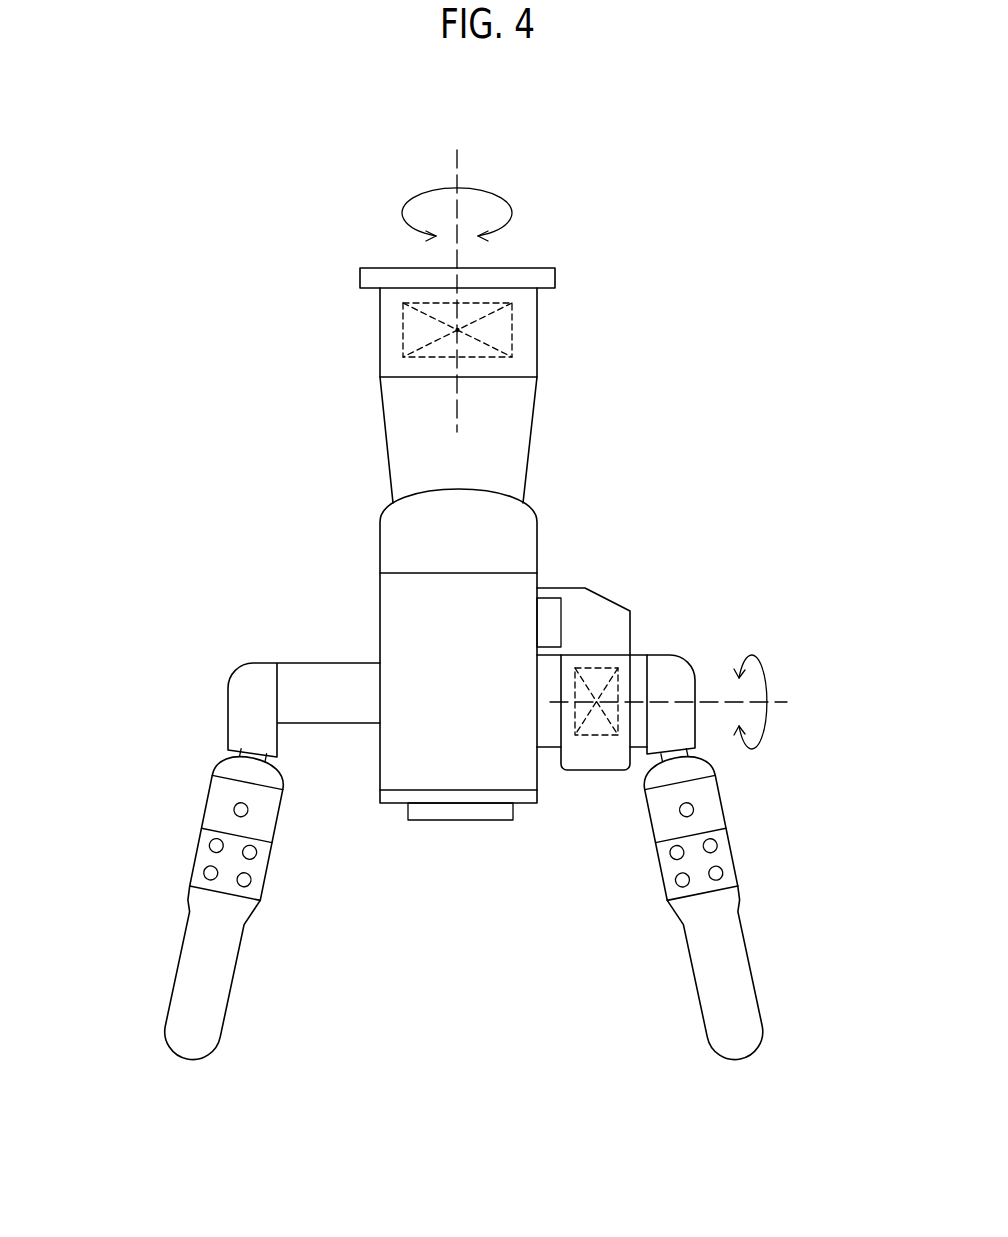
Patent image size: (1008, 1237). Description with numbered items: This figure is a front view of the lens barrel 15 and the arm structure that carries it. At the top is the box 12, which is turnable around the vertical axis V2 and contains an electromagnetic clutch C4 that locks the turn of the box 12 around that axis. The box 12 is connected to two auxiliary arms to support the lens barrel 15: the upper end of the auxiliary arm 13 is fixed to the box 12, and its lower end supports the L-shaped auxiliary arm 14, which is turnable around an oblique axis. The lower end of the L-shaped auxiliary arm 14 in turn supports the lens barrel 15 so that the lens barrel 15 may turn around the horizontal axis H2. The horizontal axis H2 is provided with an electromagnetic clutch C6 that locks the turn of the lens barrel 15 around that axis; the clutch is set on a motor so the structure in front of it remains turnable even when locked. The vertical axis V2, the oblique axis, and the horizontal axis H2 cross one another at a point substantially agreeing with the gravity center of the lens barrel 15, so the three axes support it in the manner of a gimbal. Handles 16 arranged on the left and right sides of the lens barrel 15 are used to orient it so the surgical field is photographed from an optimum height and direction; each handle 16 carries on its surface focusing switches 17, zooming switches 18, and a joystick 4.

The joystick 4 is at (233, 811).
The box 12 is at (537, 330).
The auxiliary arm 13 is at (387, 441).
The L-shaped auxiliary arm 14 is at (612, 599).
The lens barrel 15 is at (380, 598).
The handles 16 is at (173, 978).
The focusing switches 17 is at (250, 880).
The zooming switches 18 is at (203, 873).
The electromagnetic clutch C4 is at (403, 330).
The electromagnetic clutch C6 is at (618, 688).
The vertical axis V2 is at (457, 274).
The horizontal axis H2 is at (690, 702).